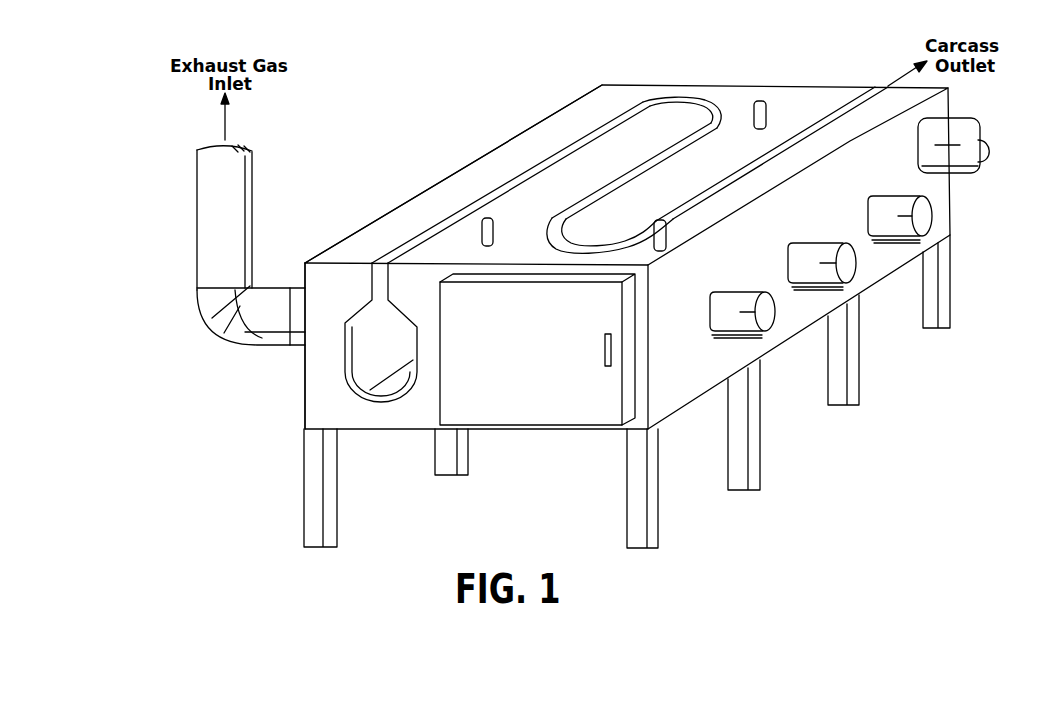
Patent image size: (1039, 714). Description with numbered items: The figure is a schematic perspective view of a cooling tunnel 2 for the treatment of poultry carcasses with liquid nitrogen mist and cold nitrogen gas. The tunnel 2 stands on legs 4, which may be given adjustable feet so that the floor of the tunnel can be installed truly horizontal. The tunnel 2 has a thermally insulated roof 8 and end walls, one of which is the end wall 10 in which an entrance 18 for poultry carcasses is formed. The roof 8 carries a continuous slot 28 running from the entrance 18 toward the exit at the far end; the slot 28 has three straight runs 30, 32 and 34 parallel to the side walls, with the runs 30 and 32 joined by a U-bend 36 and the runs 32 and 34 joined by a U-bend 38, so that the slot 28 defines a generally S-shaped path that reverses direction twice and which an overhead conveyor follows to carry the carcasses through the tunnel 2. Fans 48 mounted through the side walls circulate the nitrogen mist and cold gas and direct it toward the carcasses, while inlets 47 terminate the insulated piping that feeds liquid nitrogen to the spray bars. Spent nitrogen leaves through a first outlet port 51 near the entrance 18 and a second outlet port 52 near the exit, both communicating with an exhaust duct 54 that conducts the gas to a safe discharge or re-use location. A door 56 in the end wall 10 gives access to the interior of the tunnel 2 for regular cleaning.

The tunnel 2 is at (358, 220).
The legs 4 is at (658, 516).
The roof 8 is at (455, 176).
The end wall 10 is at (310, 353).
The entrance 18 is at (370, 375).
The slot 28 is at (522, 180).
The straight run 30 is at (412, 236).
The straight run 32 is at (608, 187).
The straight run 34 is at (728, 178).
The U-bend 36 is at (695, 97).
The U-bend 38 is at (575, 255).
The inlets 47 is at (498, 229).
The fans 48 is at (735, 292).
The first outlet port 51 is at (303, 300).
The second outlet port 52 is at (967, 118).
The exhaust duct 54 is at (200, 206).
The door 56 is at (543, 433).